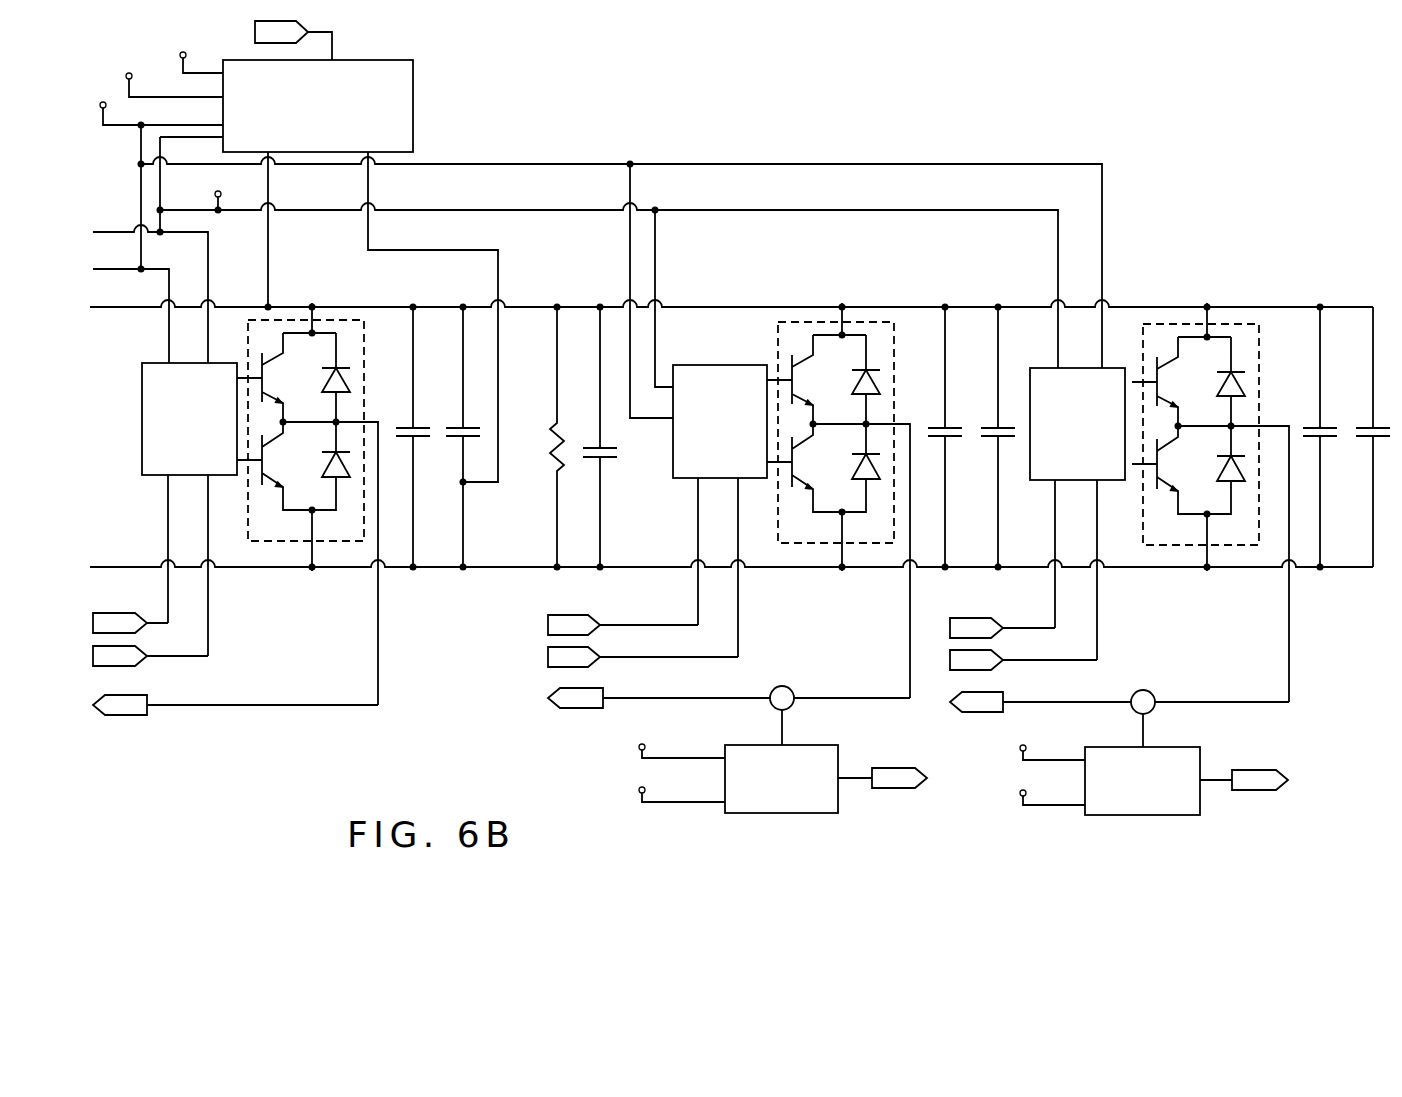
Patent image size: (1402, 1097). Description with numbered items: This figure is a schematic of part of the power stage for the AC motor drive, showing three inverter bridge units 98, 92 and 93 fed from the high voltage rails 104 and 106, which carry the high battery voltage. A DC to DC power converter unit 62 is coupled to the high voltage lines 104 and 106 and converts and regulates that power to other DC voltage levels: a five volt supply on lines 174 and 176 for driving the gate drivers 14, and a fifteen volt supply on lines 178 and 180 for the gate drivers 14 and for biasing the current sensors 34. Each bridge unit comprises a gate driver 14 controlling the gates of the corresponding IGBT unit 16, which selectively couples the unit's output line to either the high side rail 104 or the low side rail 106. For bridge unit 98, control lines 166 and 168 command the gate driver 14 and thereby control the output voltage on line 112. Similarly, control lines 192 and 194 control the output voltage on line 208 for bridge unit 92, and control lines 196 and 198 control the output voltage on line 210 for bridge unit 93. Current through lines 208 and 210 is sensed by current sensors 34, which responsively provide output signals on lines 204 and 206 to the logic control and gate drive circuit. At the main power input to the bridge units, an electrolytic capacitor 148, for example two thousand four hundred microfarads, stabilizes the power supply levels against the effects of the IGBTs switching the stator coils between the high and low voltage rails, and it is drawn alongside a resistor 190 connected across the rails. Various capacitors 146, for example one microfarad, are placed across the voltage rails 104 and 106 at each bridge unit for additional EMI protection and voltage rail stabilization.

The gate driver 14 is at (143, 420).
The IGBT unit 16 is at (367, 377).
The current sensor 34 is at (805, 808).
The DC to DC power converter unit 62 is at (403, 113).
The bridge unit 92 is at (821, 552).
The bridge unit 93 is at (1187, 555).
The bridge unit 98 is at (288, 550).
The high side voltage rail 104 is at (268, 270).
The low side voltage rail 106 is at (457, 250).
The output line 112 is at (318, 705).
The capacitors 146 is at (462, 425).
The electrolytic capacitor 148 is at (608, 458).
The control line 166 is at (155, 620).
The control line 168 is at (182, 656).
The supply line 174 is at (140, 193).
The supply line 176 is at (162, 220).
The supply line 178 is at (203, 73).
The supply line 180 is at (168, 97).
The resistor 190 is at (550, 427).
The control line 192 is at (675, 625).
The control line 194 is at (663, 658).
The control line 196 is at (1018, 627).
The control line 198 is at (1030, 660).
The output signal line 204 is at (900, 777).
The output signal line 206 is at (1250, 777).
The output line 208 is at (890, 698).
The output line 210 is at (1188, 702).